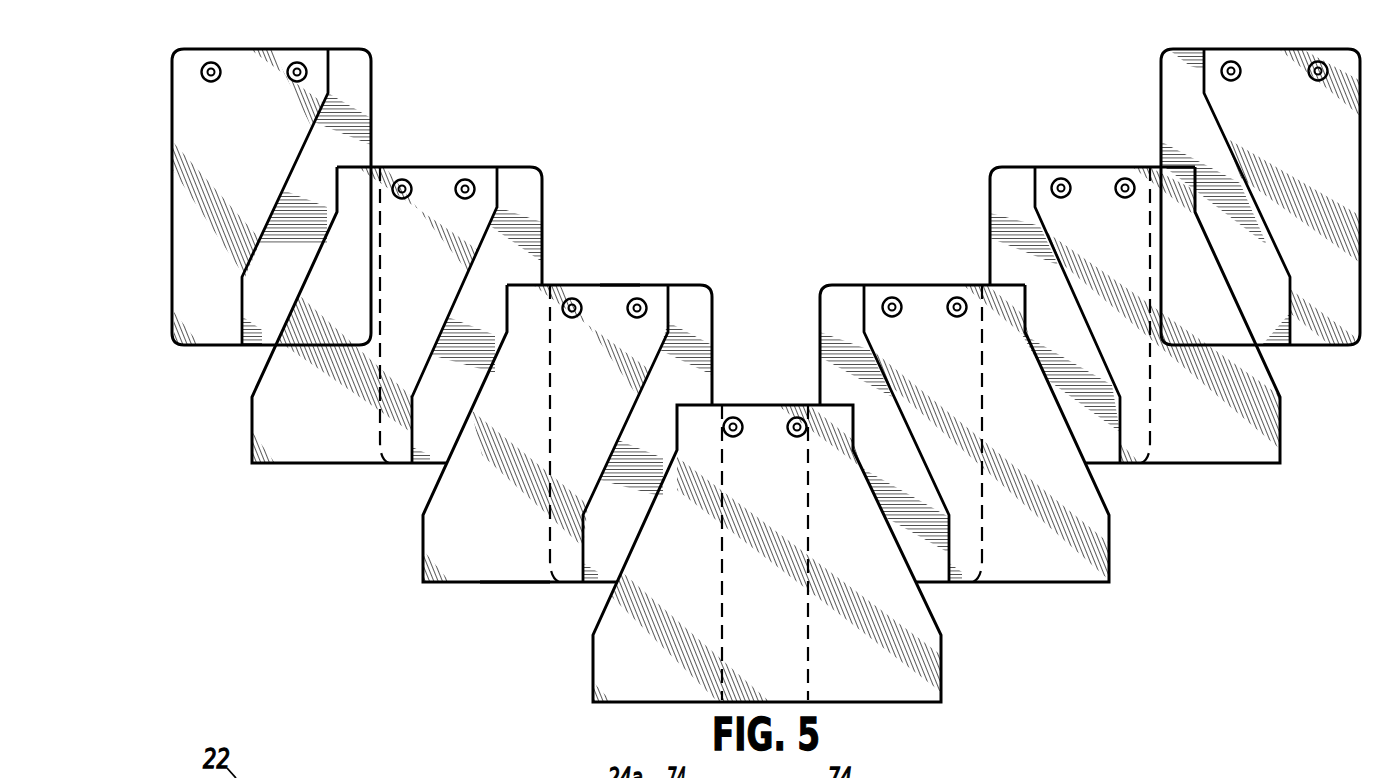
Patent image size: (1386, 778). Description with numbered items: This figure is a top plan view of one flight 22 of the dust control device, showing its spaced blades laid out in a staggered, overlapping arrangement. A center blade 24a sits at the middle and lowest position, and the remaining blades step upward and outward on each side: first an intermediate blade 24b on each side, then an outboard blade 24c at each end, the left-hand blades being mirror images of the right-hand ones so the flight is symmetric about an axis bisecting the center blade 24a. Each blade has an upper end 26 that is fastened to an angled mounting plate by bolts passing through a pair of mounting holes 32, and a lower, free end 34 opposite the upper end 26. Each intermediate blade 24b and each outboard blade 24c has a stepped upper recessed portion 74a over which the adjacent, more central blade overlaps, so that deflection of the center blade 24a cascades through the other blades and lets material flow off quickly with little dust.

The flight 22 is at (136, 129).
The center blade 24a is at (778, 623).
The intermediate blade 24b is at (362, 298).
The outboard blade 24c is at (253, 158).
The upper end 26 is at (619, 285).
The mounting holes 32 is at (957, 296).
The lower free end 34 is at (515, 583).
The upper recessed portion 74a is at (356, 93).